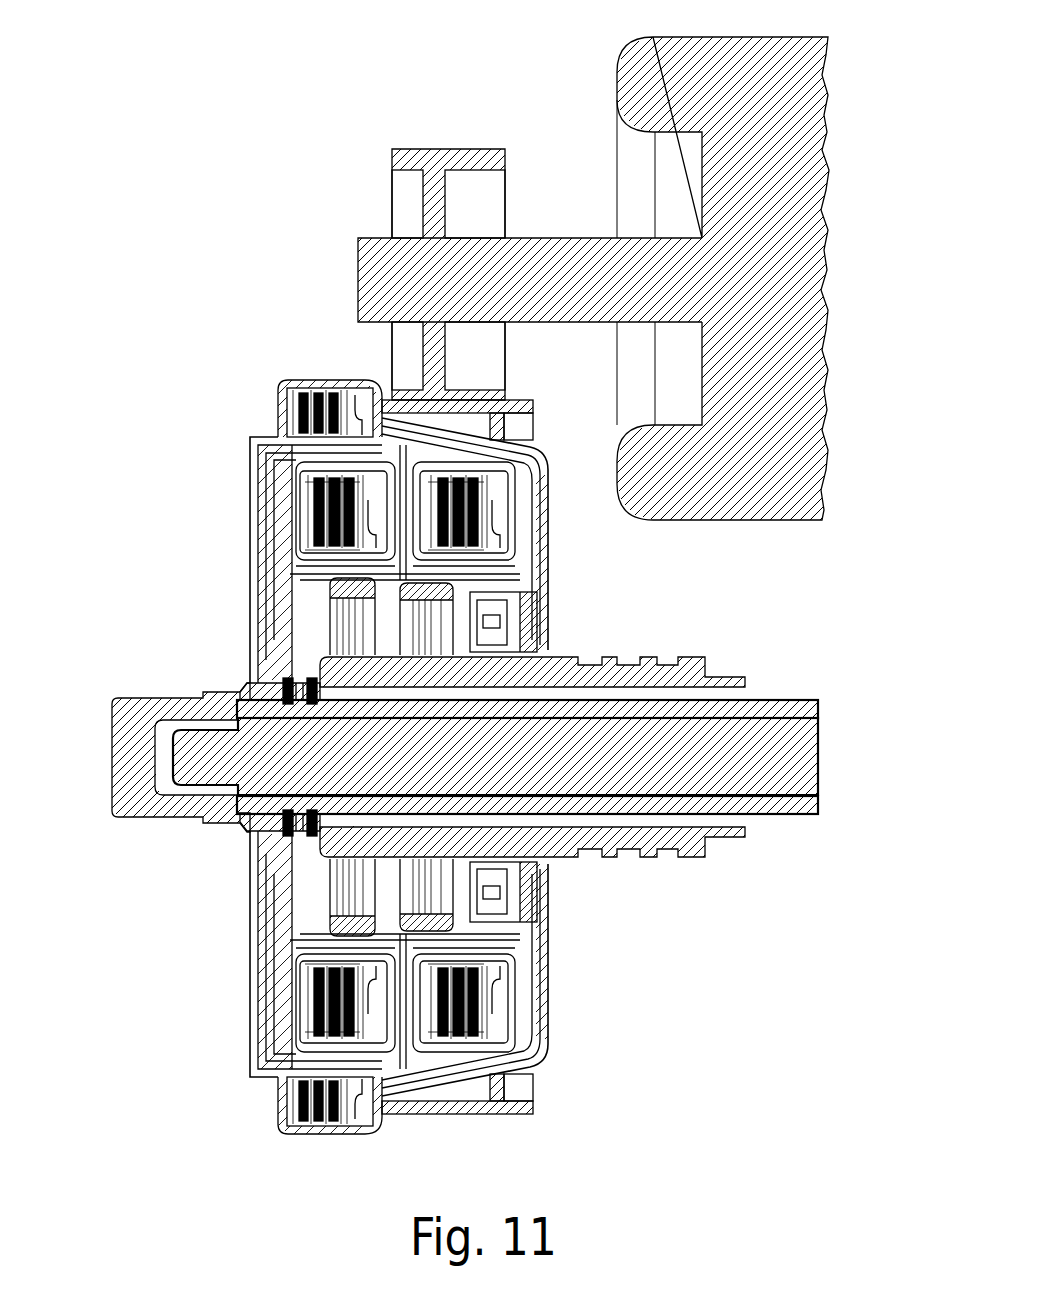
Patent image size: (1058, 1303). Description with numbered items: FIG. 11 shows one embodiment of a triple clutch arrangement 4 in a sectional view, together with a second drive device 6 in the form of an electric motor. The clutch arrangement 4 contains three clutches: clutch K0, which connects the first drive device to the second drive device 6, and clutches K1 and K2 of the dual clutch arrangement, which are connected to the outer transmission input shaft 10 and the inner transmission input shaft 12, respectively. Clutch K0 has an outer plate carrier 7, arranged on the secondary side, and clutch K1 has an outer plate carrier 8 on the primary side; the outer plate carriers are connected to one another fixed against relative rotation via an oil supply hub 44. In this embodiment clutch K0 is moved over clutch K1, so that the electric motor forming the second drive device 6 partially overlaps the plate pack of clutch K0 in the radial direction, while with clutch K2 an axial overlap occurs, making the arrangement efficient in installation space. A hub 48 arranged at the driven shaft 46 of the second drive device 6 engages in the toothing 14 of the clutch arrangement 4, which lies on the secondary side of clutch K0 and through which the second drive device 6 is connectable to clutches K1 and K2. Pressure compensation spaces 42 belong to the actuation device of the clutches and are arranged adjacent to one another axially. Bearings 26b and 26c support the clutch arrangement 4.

The clutch arrangement 4 is at (243, 255).
The second drive device 6 is at (598, 55).
The outer plate carrier 7 is at (540, 470).
The outer plate carrier 8 is at (537, 438).
The transmission input shaft 10 is at (783, 700).
The transmission input shaft 12 is at (770, 753).
The toothing 14 is at (519, 410).
The bearing 26b is at (248, 687).
The bearing 26c is at (280, 717).
The pressure compensation spaces 42 is at (445, 622).
The oil supply hub 44 is at (700, 657).
The driven shaft 46 is at (563, 267).
The hub 48 is at (398, 152).
The clutch K0 is at (287, 420).
The clutch K1 is at (300, 492).
The clutch K2 is at (545, 537).